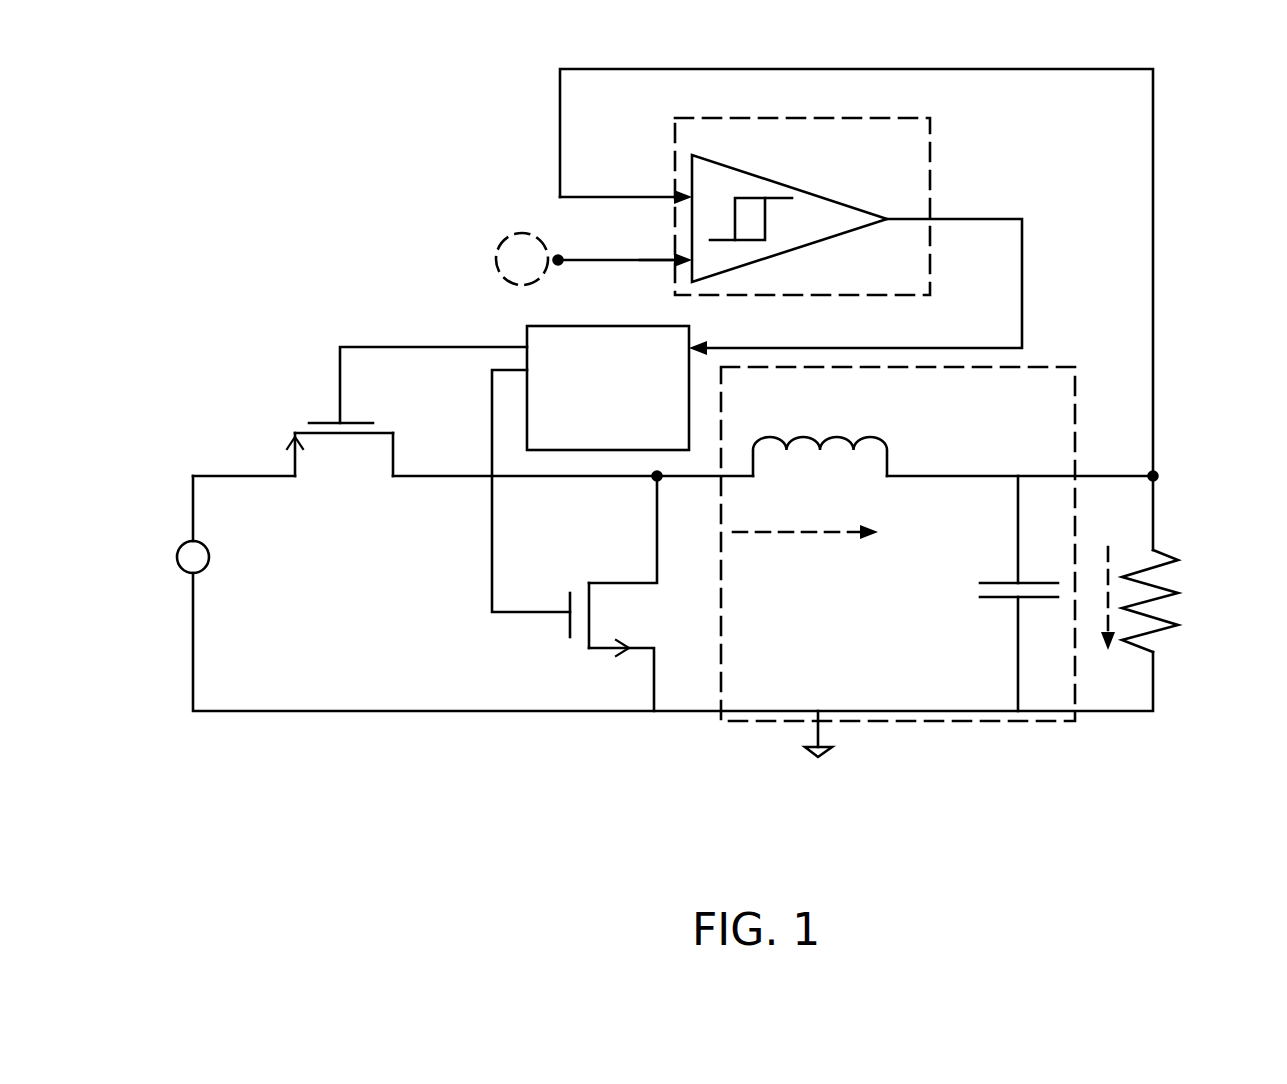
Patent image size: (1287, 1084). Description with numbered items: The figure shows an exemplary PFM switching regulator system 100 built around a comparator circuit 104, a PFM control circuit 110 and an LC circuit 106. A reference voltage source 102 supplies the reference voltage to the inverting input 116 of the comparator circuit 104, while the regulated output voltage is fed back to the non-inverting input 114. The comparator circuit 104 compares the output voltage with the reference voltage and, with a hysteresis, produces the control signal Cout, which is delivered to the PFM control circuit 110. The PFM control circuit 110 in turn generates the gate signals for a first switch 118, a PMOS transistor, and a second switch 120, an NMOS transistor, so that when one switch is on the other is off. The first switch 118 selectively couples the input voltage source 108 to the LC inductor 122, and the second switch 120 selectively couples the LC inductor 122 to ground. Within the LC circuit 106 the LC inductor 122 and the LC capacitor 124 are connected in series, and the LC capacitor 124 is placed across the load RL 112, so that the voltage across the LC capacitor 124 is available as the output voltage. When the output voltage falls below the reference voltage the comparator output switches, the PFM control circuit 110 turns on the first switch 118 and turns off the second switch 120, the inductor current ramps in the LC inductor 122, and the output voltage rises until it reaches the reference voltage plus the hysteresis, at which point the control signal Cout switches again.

The PFM switching regulator system 100 is at (901, 812).
The reference voltage source 102 is at (500, 243).
The comparator circuit 104 is at (930, 233).
The LC circuit 106 is at (866, 697).
The input voltage source 108 is at (185, 568).
The PFM control circuit 110 is at (676, 444).
The load RL 112 is at (1178, 592).
The non-inverting input 114 is at (683, 195).
The inverting input 116 is at (683, 265).
The first switch 118 is at (337, 453).
The second switch 120 is at (630, 612).
The LC inductor 122 is at (815, 455).
The LC capacitor 124 is at (1000, 598).